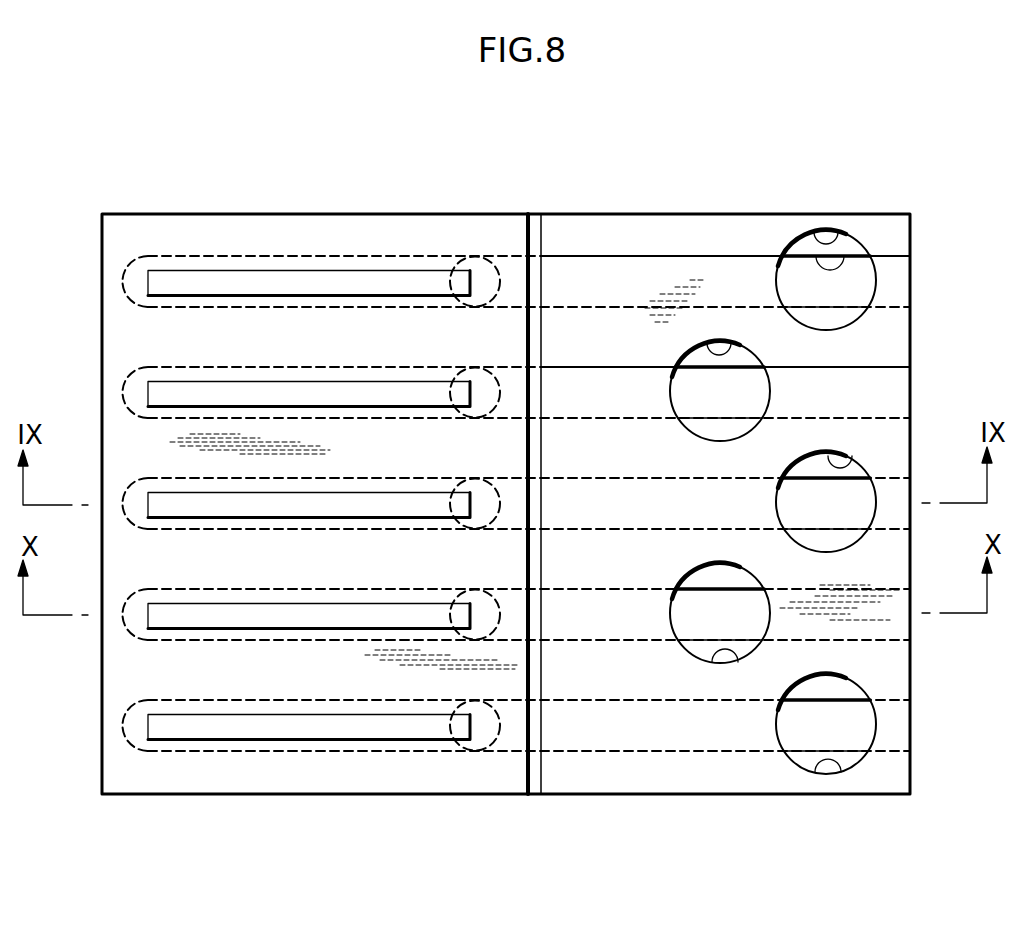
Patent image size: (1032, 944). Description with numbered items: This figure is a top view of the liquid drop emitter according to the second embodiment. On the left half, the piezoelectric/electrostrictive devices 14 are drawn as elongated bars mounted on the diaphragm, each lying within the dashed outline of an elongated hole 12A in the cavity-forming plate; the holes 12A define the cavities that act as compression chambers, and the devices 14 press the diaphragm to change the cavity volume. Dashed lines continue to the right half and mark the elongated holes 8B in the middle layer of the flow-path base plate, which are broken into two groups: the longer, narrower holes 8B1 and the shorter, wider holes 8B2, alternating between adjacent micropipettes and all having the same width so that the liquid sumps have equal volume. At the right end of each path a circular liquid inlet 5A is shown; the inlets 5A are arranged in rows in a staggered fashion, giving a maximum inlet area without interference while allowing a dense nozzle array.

The piezoelectric/electrostrictive device 14 is at (285, 385).
The elongated hole 12A is at (403, 370).
The elongated hole 8B is at (851, 250).
The elongated hole 8B1 is at (605, 260).
The elongated hole 8B2 is at (560, 370).
The liquid inlet 5A is at (719, 345).